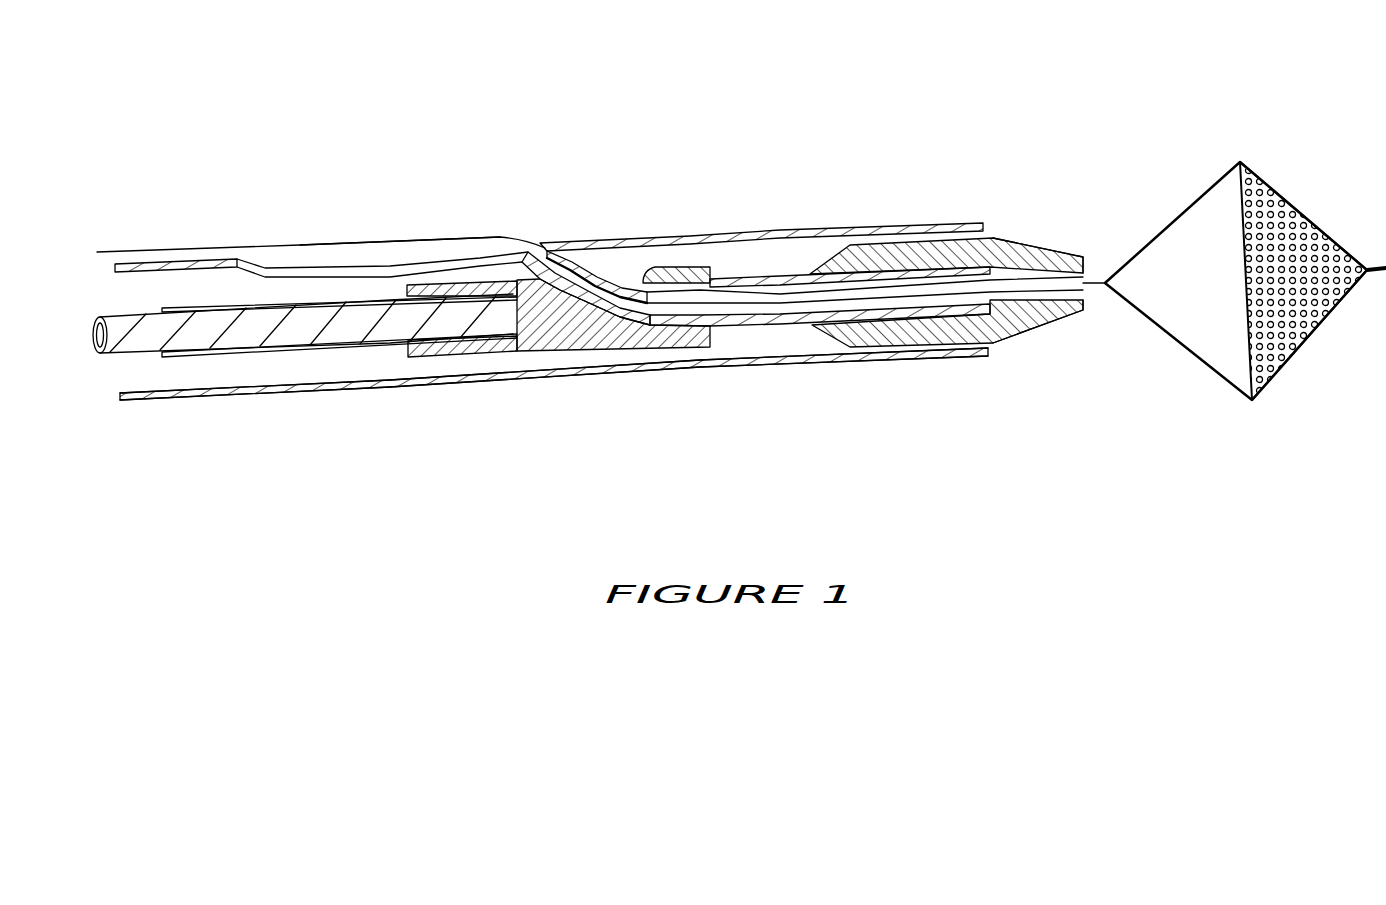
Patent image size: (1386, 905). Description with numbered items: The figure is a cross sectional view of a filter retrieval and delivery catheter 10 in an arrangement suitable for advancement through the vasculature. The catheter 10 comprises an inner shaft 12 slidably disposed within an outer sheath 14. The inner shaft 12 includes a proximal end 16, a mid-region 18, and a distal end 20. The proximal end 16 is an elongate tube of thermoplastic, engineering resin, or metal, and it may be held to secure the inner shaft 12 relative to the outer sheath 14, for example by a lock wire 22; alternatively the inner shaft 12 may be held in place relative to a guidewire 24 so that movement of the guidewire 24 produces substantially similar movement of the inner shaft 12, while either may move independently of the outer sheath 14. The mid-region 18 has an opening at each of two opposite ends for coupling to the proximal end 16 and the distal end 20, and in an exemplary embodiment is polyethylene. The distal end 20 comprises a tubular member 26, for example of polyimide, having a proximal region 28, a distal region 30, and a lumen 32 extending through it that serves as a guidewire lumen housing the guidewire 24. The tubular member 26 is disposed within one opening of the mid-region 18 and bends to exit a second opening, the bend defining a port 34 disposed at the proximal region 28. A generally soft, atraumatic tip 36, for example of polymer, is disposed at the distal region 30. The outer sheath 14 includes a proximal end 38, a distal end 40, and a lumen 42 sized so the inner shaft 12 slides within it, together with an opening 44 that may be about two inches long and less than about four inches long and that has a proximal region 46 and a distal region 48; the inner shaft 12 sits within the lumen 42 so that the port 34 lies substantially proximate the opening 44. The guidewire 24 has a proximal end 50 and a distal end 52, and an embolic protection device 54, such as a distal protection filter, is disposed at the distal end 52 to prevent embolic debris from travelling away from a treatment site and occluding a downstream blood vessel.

The filter retrieval and delivery catheter 10 is at (432, 108).
The inner shaft 12 is at (446, 362).
The outer sheath 14 is at (630, 373).
The proximal end 16 is at (203, 310).
The mid-region 18 is at (547, 333).
The distal end 20 is at (775, 273).
The lock wire 22 is at (150, 340).
The guidewire 24 is at (228, 258).
The tubular member 26 is at (786, 317).
The proximal region 28 is at (621, 283).
The distal region 30 is at (970, 270).
The lumen 32 is at (716, 293).
The port 34 is at (592, 268).
The tip 36 is at (919, 247).
The proximal end 38 is at (340, 393).
The distal end 40 is at (980, 353).
The lumen 42 is at (243, 373).
The opening 44 is at (383, 262).
The proximal region 46 is at (268, 262).
The distal region 48 is at (511, 240).
The proximal end 50 is at (122, 250).
The distal end 52 is at (1095, 283).
The embolic protection device 54 is at (1307, 217).